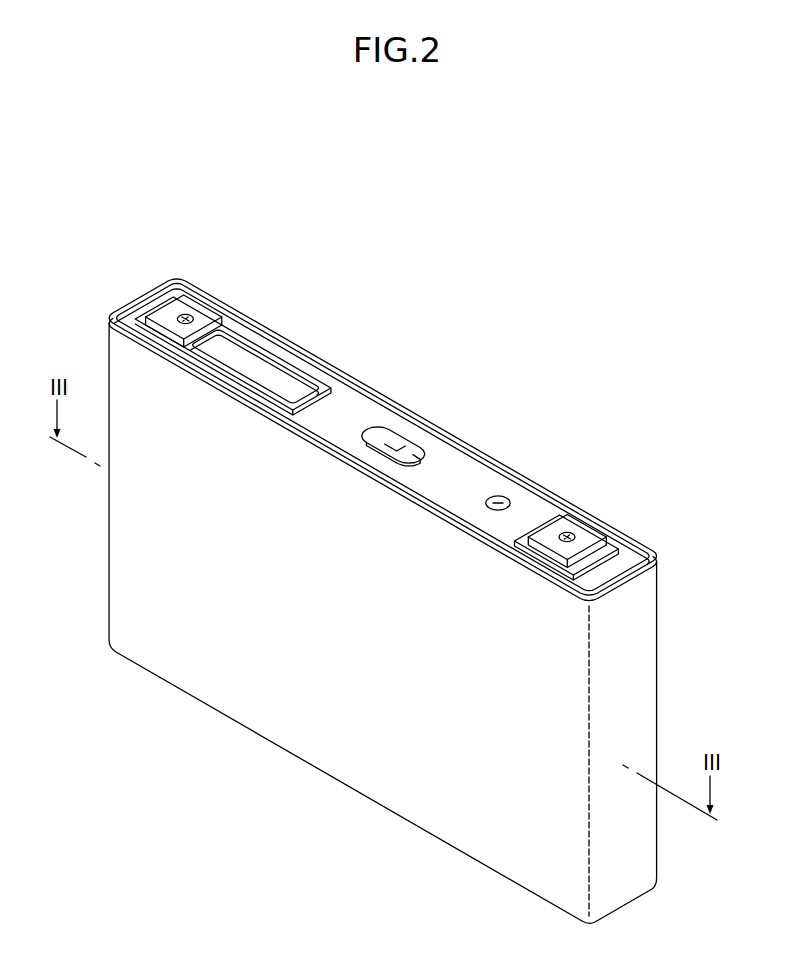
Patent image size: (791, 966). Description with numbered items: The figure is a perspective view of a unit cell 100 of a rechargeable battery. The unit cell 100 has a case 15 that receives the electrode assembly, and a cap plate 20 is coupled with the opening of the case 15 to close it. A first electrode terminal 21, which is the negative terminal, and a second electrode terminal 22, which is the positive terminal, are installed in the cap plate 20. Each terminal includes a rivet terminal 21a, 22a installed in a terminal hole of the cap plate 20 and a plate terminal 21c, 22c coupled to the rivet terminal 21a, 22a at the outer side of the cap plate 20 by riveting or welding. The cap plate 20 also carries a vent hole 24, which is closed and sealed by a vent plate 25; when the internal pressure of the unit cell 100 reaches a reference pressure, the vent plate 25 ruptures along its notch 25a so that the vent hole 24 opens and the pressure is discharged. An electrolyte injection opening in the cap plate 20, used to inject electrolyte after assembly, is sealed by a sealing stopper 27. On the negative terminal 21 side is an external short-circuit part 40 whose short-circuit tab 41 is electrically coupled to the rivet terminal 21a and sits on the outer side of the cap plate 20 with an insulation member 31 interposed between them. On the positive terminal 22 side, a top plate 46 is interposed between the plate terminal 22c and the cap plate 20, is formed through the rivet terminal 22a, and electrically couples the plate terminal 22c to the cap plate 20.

The unit cell 100 is at (412, 577).
The case 15 is at (310, 730).
The cap plate 20 is at (356, 408).
The first electrode terminal 21 is at (189, 289).
The rivet terminal 21a is at (178, 316).
The plate terminal 21c is at (212, 318).
The second electrode terminal 22 is at (616, 552).
The rivet terminal 22a is at (573, 537).
The plate terminal 22c is at (582, 548).
The vent hole 24 is at (439, 391).
The vent plate 25 is at (400, 446).
The notch 25a is at (410, 456).
The sealing stopper 27 is at (500, 500).
The insulation member 31 is at (252, 338).
The external short-circuit part 40 is at (299, 341).
The short-circuit tab 41 is at (302, 382).
The top plate 46 is at (588, 570).